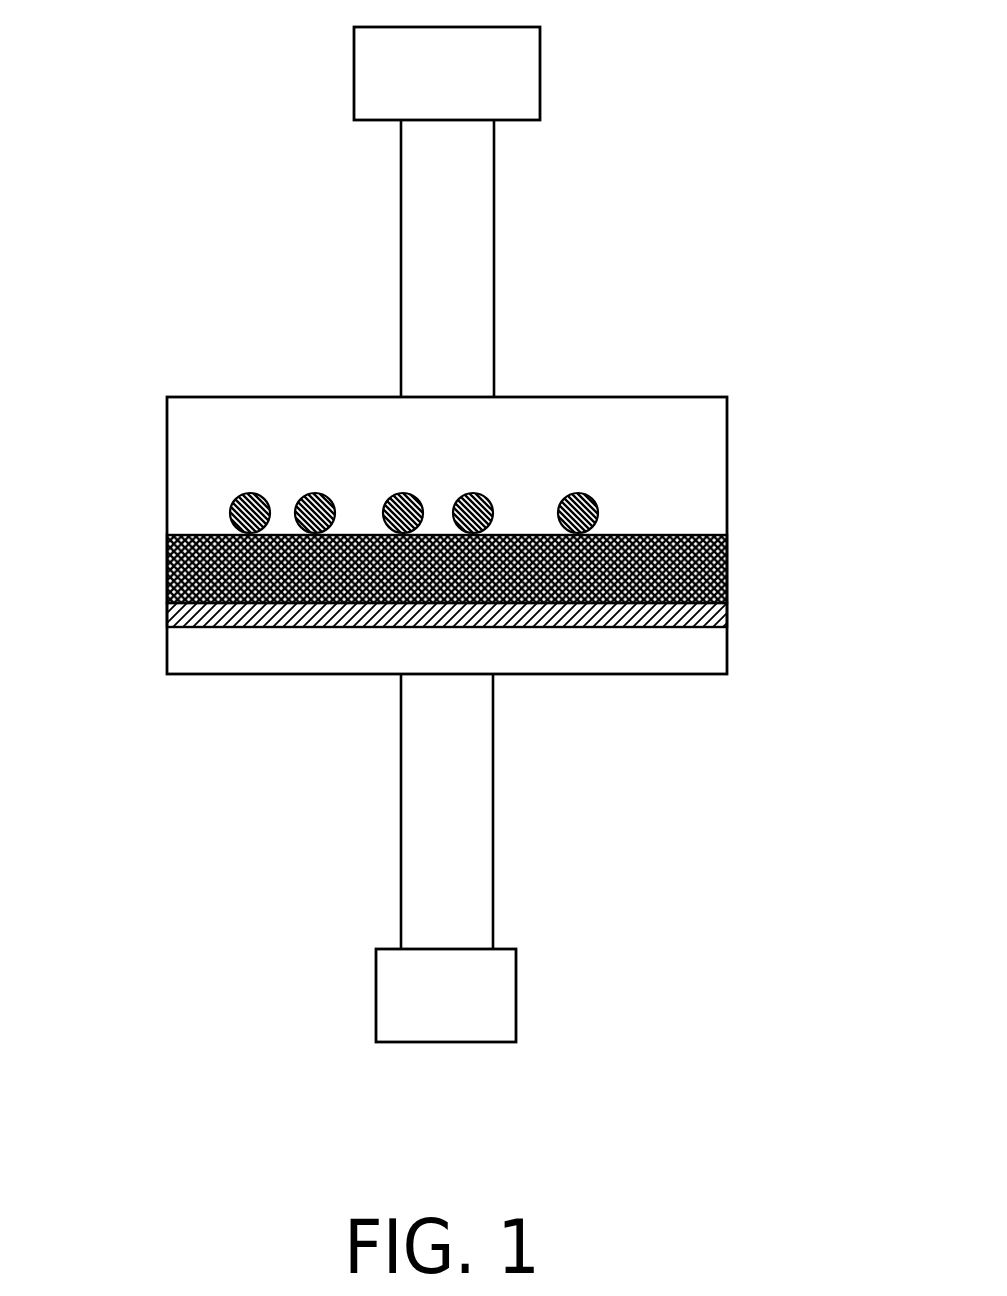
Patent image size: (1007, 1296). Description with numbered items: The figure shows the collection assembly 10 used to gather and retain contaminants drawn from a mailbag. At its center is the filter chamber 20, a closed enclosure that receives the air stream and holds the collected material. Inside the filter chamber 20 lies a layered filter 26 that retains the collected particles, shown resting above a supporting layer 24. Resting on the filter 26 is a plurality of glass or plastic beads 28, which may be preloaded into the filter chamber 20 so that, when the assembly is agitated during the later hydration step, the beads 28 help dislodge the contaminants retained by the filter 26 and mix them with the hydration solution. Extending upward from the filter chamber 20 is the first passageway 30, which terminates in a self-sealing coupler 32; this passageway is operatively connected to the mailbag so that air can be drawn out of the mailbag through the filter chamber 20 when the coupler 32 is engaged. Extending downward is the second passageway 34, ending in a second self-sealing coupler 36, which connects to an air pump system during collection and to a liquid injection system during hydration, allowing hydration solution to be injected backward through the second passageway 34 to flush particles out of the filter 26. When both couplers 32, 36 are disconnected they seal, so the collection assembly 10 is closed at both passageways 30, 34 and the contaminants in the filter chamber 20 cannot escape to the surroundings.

The collection assembly 10 is at (160, 254).
The filter chamber 20 is at (167, 465).
The substrate layer 24 is at (727, 619).
The filter 26 is at (727, 557).
The beads 28 is at (202, 512).
The first passageway 30 is at (469, 283).
The coupler 32 is at (541, 97).
The second passageway 34 is at (469, 858).
The coupler 36 is at (492, 995).